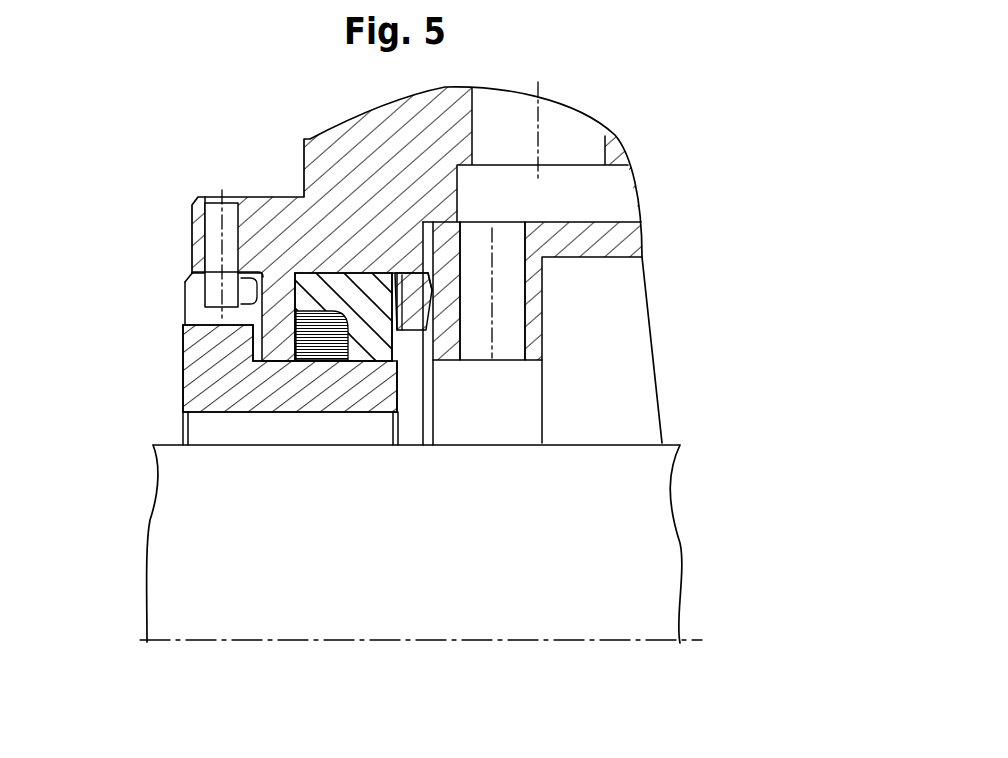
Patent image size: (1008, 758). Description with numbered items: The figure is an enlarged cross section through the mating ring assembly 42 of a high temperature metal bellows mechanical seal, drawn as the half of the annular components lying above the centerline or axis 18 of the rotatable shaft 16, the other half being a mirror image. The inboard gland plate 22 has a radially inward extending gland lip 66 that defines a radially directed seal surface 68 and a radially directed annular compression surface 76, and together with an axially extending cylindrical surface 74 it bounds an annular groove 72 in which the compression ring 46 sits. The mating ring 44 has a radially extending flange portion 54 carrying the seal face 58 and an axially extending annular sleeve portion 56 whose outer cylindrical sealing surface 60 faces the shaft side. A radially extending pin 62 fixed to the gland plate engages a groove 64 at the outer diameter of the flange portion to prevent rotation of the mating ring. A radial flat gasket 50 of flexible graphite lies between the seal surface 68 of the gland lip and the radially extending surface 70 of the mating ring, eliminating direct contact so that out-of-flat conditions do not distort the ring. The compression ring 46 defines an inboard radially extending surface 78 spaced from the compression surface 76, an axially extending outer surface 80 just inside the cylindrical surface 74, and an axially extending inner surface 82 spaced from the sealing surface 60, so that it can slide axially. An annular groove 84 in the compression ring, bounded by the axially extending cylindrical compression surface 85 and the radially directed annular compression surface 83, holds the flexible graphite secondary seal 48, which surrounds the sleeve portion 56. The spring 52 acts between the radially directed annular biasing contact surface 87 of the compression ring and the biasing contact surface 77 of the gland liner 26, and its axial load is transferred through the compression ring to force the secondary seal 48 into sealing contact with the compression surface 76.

The rotatable shaft 16 is at (599, 540).
The centerline or axis 18 is at (648, 641).
The inboard gland plate 22 is at (313, 143).
The gland liner 26 is at (422, 314).
The mating ring assembly 42 is at (319, 440).
The mating ring 44 is at (303, 412).
The compression ring 46 is at (300, 283).
The flexible graphite secondary seal 48 is at (362, 365).
The radial flat gasket 50 is at (275, 355).
The spring 52 is at (543, 419).
The flange portion 54 is at (183, 347).
The axially extending annular sleeve portion 56 is at (333, 410).
The seal face 58 is at (183, 358).
The outer cylindrical sealing surface 60 is at (375, 365).
The pin 62 is at (208, 217).
The groove 64 is at (197, 298).
The gland lip 66 is at (300, 355).
The seal surface 68 is at (190, 290).
The radially extending surface 70 is at (258, 300).
The annular groove 72 is at (433, 326).
The axially extending cylindrical surface 74 is at (352, 280).
The radially directed annular compression surface 76 is at (285, 287).
The radially directed annular biasing contact surface 77 is at (418, 318).
The inboard radially extending surface 78 is at (220, 200).
The axially extending outer surface 80 is at (313, 278).
The axially extending inner surface 82 is at (394, 365).
The radially directed annular compression surface 83 is at (355, 340).
The annular groove 84 is at (297, 345).
The axially extending cylindrical compression surface 85 is at (297, 313).
The radially directed annular biasing contact surface 87 is at (398, 272).